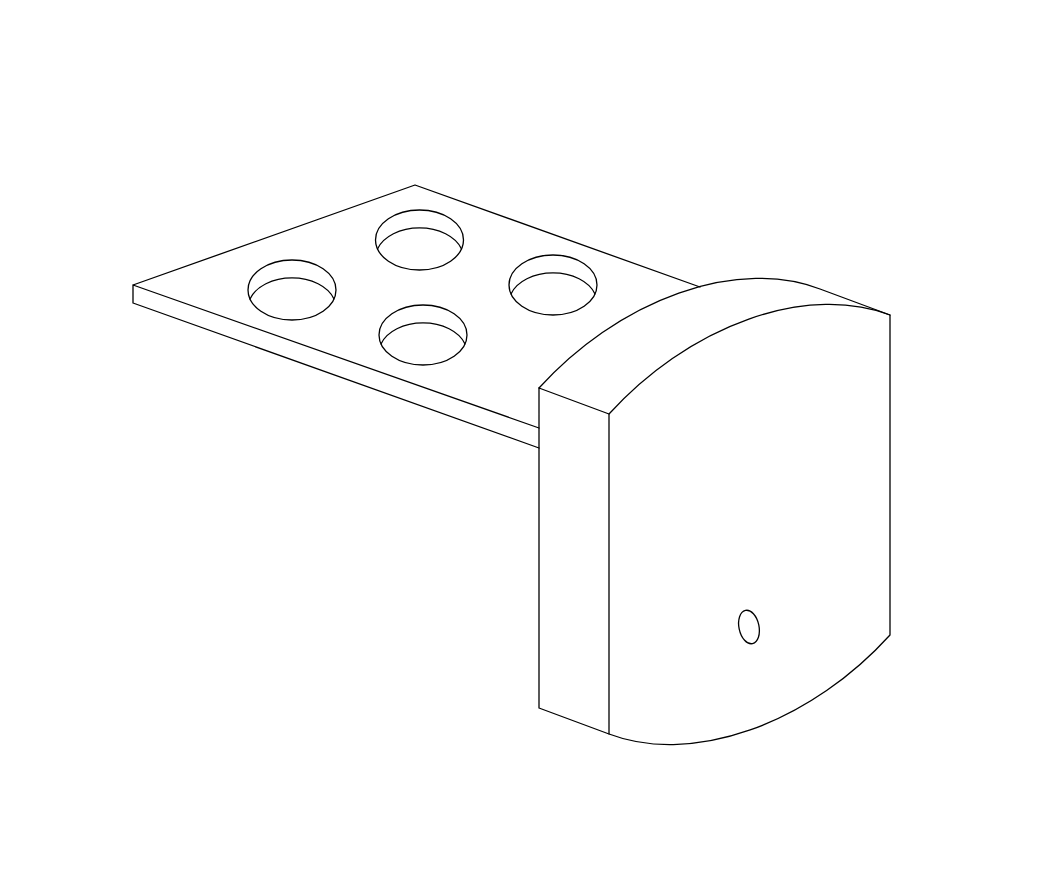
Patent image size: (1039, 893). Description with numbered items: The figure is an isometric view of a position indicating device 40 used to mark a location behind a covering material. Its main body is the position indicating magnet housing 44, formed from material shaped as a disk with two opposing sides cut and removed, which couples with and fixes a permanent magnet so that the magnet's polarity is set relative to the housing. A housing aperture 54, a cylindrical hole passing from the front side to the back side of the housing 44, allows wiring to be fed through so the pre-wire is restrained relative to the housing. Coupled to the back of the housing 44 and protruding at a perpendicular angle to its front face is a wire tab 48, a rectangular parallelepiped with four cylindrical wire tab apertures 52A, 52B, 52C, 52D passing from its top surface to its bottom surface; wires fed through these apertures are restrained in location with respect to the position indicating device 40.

The position indicating device 40 is at (812, 215).
The wire tab 48 is at (498, 243).
The wire tab aperture 52A is at (437, 232).
The wire tab aperture 52B is at (563, 273).
The wire tab aperture 52C is at (302, 282).
The wire tab aperture 52D is at (445, 328).
The position indicating magnet housing 44 is at (862, 340).
The housing aperture 54 is at (750, 627).